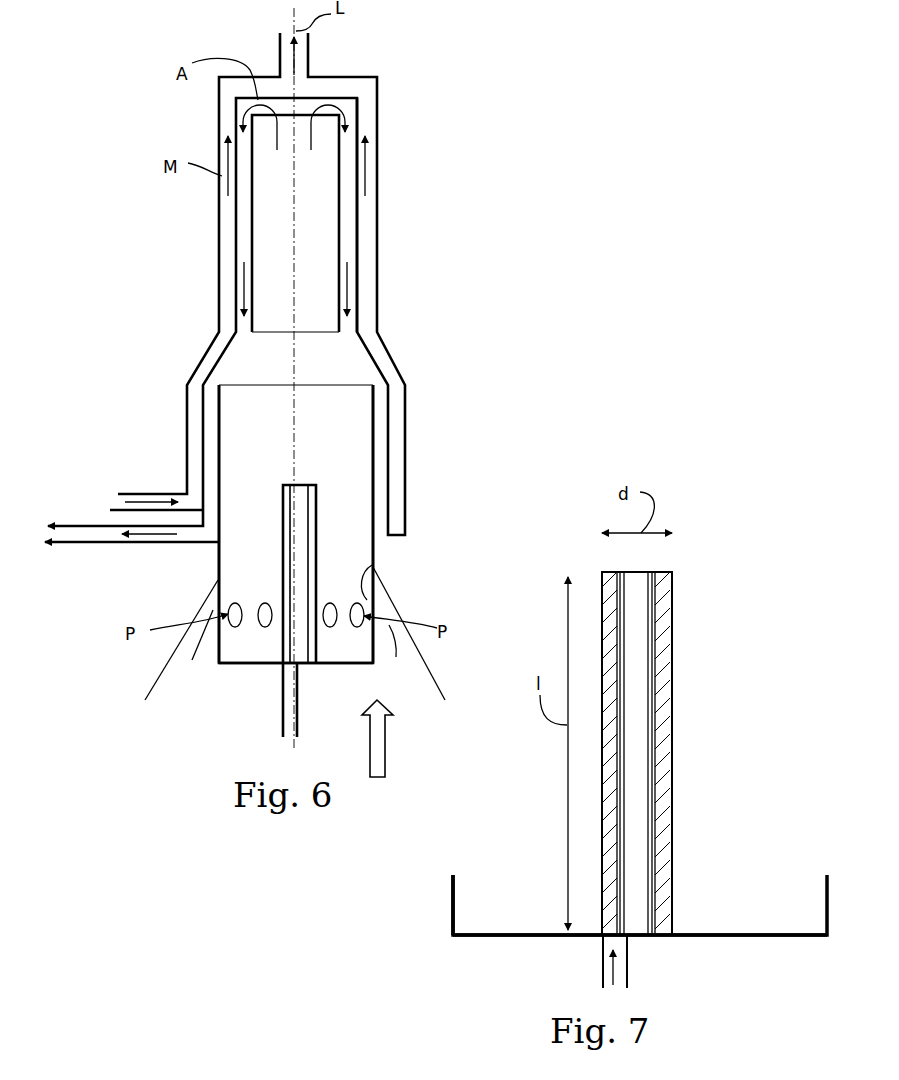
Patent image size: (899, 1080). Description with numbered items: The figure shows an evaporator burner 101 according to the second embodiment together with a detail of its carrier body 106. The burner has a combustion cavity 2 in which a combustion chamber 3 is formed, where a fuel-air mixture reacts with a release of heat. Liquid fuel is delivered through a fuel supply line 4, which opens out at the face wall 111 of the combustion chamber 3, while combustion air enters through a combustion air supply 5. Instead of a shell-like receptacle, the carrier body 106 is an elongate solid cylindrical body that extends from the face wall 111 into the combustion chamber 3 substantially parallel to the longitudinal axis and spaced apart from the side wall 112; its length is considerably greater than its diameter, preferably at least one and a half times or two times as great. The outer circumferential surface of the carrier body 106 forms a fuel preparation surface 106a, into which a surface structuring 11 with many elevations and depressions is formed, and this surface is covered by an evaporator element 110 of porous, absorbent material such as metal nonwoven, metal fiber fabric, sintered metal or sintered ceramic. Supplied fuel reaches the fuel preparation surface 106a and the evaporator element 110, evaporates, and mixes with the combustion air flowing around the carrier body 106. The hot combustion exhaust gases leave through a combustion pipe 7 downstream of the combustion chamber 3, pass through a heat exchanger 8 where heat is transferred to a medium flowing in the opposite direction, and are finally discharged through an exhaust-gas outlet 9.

In FIG. 6, the combustion cavity 2 is at (377, 545).
In FIG. 6, the combustion chamber 3 is at (248, 553).
In FIG. 6, the fuel supply line 4 is at (281, 710).
In FIG. 7, the fuel supply line 4 is at (603, 965).
In FIG. 6, the combustion air supply 5 is at (378, 737).
In FIG. 6, the combustion pipe 7 is at (336, 230).
In FIG. 6, the heat exchanger 8 is at (352, 212).
In FIG. 6, the exhaust-gas outlet 9 is at (50, 536).
In FIG. 7, the surface structuring 11 is at (660, 616).
In FIG. 6, the evaporator burner 101 is at (540, 144).
In FIG. 6, the carrier body 106 is at (305, 547).
In FIG. 7, the carrier body 106 is at (638, 757).
In FIG. 6, the fuel preparation surface 106a is at (317, 516).
In FIG. 7, the fuel preparation surface 106a is at (657, 688).
In FIG. 6, the evaporator element 110 is at (320, 501).
In FIG. 7, the evaporator element 110 is at (667, 635).
In FIG. 6, the face wall 111 is at (253, 660).
In FIG. 7, the face wall 111 is at (717, 930).
In FIG. 6, the side wall 112 is at (378, 565).
In FIG. 7, the side wall 112 is at (460, 884).